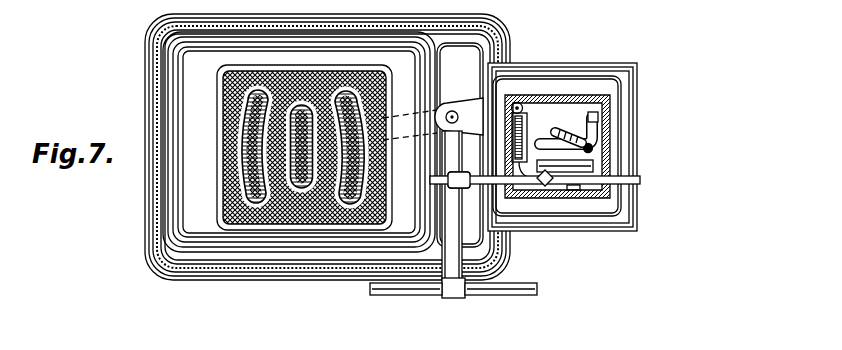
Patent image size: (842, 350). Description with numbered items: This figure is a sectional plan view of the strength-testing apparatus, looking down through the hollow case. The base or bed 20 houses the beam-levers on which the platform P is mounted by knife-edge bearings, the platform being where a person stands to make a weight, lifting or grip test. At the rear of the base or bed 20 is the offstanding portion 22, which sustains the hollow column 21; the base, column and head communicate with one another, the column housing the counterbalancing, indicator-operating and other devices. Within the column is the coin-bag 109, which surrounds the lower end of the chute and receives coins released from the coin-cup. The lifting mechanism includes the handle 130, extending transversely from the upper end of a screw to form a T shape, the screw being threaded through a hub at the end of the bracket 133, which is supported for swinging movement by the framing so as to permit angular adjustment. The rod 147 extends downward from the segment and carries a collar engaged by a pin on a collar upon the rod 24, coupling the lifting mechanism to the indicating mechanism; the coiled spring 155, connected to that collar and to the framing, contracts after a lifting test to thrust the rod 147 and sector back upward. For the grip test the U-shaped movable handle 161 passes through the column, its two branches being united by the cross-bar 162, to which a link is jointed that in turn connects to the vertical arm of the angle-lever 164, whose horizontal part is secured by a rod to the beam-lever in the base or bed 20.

The base or bed 20 is at (298, 262).
The platform P is at (236, 258).
The bracket 133 is at (461, 110).
The movable handle 161 is at (447, 178).
The handle 130 is at (477, 289).
The offstanding portion 22 is at (637, 230).
The column 21 is at (612, 232).
The coiled spring 155 is at (622, 110).
The coin-bag 109 is at (519, 103).
The angle-lever 164 is at (598, 168).
The rod 147 is at (580, 140).
The rod 24 is at (590, 150).
The cross-bar 162 is at (641, 180).